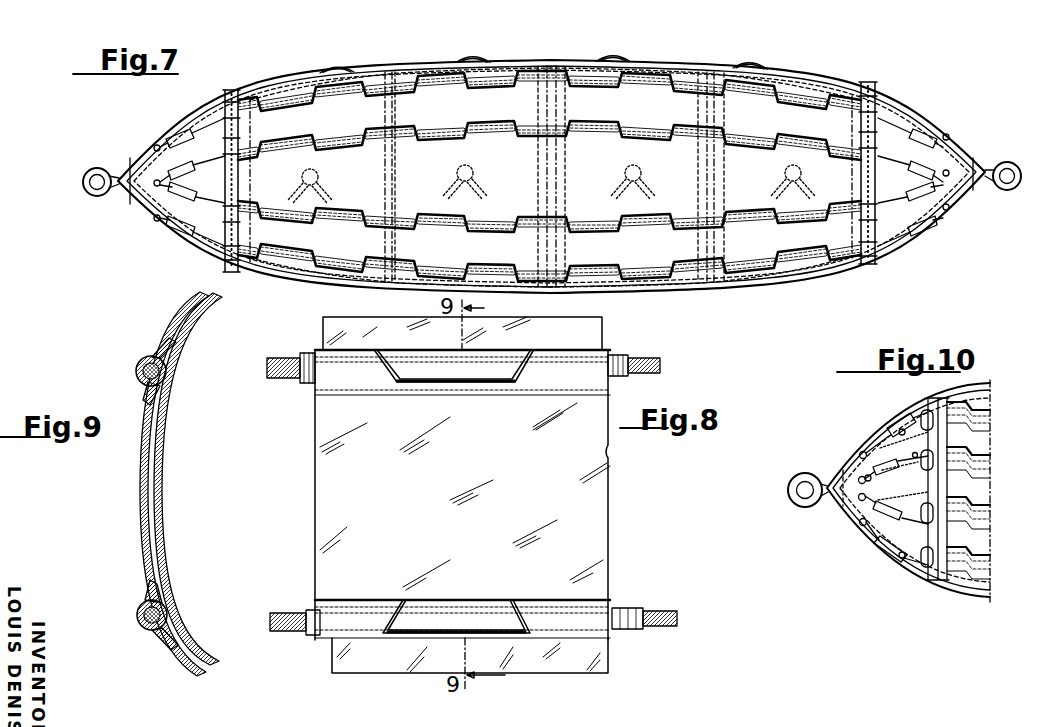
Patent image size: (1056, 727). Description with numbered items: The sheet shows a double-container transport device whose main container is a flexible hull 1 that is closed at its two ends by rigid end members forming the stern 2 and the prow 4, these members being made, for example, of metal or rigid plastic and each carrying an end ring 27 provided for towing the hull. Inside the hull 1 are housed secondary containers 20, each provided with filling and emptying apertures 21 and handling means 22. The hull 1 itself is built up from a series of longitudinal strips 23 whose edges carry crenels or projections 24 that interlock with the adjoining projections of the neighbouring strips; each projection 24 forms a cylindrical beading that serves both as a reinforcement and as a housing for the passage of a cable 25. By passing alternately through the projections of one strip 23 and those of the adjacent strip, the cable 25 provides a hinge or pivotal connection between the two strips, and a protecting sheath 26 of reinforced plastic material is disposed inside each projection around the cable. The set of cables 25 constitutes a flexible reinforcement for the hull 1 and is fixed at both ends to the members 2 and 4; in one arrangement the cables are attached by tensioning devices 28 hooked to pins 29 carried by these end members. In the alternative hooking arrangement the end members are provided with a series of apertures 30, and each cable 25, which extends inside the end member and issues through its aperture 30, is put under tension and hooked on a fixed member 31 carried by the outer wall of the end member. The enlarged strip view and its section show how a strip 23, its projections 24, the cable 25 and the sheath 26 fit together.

In FIG. 7, the flexible hull 1 is at (412, 66).
In FIG. 7, the stern 2 is at (940, 112).
In FIG. 7, the prow 4 is at (158, 137).
In FIG. 10, the prow 4 is at (850, 444).
In FIG. 7, the secondary container 20 is at (383, 194).
In FIG. 7, the filling and emptying aperture 21 is at (322, 79).
In FIG. 7, the handling means 22 is at (320, 177).
In FIG. 7, the longitudinal strip 23 is at (386, 72).
In FIG. 8, the longitudinal strip 23 is at (609, 456).
In FIG. 7, the crenel or projection 24 is at (298, 103).
In FIG. 8, the crenel or projection 24 is at (355, 367).
In FIG. 9, the crenel or projection 24 is at (150, 357).
In FIG. 7, the cable 25 is at (212, 128).
In FIG. 8, the cable 25 is at (280, 382).
In FIG. 9, the cable 25 is at (142, 377).
In FIG. 10, the cable 25 is at (968, 398).
In FIG. 8, the protecting sheath 26 is at (306, 358).
In FIG. 9, the protecting sheath 26 is at (137, 367).
In FIG. 7, the end ring 27 is at (101, 169).
In FIG. 10, the end ring 27 is at (805, 508).
In FIG. 7, the tensioning device 28 is at (182, 142).
In FIG. 10, the tensioning device 28 is at (890, 420).
In FIG. 7, the pin 29 is at (157, 152).
In FIG. 10, the aperture 30 is at (860, 479).
In FIG. 10, the fixed member 31 is at (905, 428).